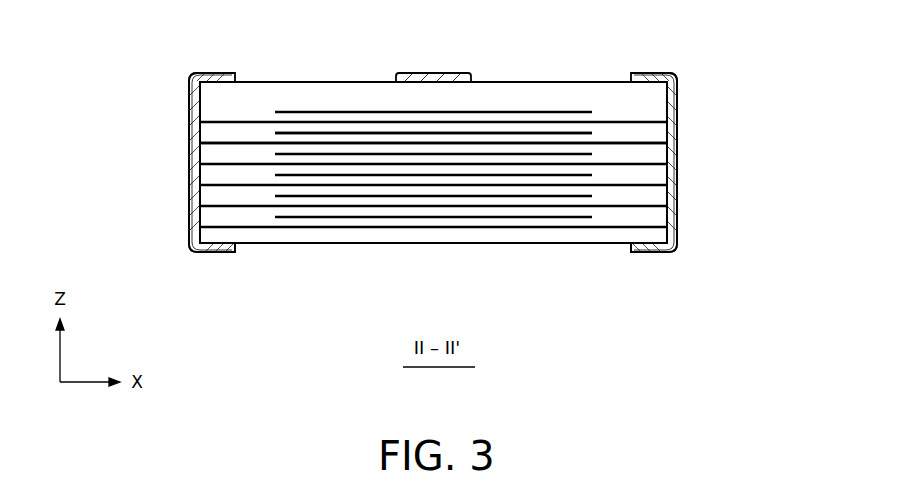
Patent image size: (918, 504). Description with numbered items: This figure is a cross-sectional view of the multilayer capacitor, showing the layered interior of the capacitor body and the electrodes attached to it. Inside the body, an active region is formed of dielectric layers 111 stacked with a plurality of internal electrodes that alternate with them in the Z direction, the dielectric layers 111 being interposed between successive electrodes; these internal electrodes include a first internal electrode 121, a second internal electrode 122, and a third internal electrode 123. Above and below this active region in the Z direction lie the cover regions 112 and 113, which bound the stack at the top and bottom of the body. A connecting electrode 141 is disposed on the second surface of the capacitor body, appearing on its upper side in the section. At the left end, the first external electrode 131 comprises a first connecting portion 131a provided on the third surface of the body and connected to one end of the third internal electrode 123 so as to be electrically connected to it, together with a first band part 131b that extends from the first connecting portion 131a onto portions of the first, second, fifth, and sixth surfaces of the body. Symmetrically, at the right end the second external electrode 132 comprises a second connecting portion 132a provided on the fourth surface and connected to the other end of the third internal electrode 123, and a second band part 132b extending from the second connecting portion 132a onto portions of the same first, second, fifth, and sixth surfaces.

The dielectric layer 111 is at (657, 133).
The cover region 112 is at (343, 98).
The cover region 113 is at (526, 245).
The first internal electrode 121 is at (526, 137).
The second internal electrode 122 is at (284, 108).
The third internal electrode 123 is at (466, 120).
The first external electrode 131 is at (81, 202).
The first connecting portion 131a is at (190, 180).
The first band part 131b is at (219, 256).
The second external electrode 132 is at (787, 200).
The second connecting portion 132a is at (677, 182).
The second band part 132b is at (647, 250).
The connecting electrode 141 is at (417, 73).